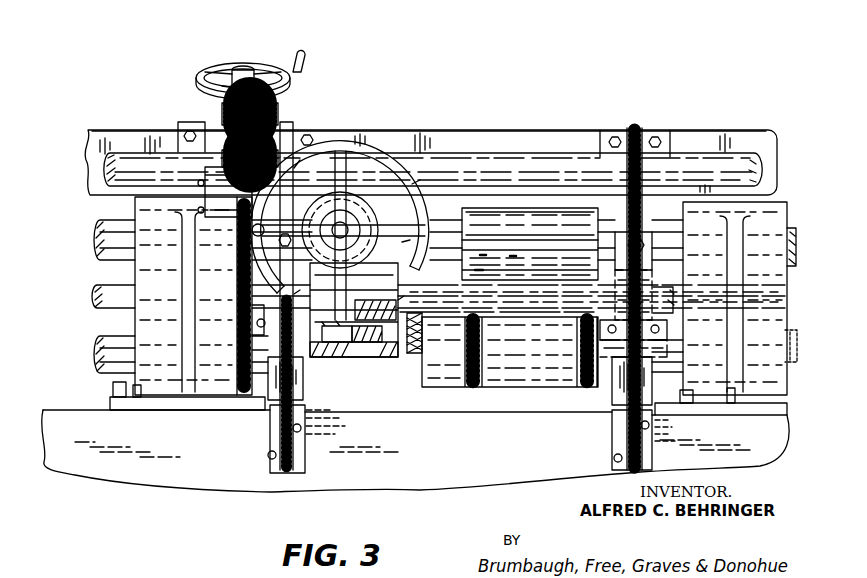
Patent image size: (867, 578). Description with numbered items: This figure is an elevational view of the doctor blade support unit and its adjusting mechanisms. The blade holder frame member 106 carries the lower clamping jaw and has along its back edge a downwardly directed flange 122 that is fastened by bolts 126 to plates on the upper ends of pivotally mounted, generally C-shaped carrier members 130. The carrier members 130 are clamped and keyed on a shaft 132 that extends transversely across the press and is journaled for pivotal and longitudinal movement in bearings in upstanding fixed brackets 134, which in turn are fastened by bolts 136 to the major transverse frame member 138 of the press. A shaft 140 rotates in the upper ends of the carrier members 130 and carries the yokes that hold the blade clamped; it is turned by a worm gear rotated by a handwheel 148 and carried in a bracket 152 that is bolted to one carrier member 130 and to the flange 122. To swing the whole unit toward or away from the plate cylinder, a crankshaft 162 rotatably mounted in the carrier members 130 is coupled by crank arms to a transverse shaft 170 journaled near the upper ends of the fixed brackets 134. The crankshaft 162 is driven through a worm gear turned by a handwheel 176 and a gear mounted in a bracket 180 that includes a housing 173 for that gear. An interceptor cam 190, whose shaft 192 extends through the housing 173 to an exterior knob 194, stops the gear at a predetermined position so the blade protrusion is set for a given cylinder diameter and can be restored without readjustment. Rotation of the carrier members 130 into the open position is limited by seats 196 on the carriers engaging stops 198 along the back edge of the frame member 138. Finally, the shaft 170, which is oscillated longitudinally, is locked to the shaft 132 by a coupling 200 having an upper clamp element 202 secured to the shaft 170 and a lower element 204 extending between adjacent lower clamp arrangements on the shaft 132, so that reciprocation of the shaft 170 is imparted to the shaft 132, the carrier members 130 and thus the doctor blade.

The holder frame member 106 is at (373, 130).
The downwardly directed flange 122 is at (437, 135).
The bolts 126 is at (654, 134).
The carrier members 130 is at (287, 137).
The shaft 132 is at (101, 355).
The fixed brackets 134 is at (182, 372).
The bolts 136 is at (117, 388).
The transverse frame member 138 is at (115, 467).
The shaft 140 is at (134, 153).
The handwheel 148 is at (263, 53).
The bracket 152 is at (213, 128).
The crankshaft 162 is at (107, 303).
The shaft 170 is at (102, 231).
The housing 173 is at (333, 345).
The handwheel 176 is at (384, 157).
The bracket 180 is at (370, 252).
The interceptor cam 190 is at (353, 352).
The shaft 192 is at (343, 334).
The knob 194 is at (424, 342).
The seats 196 is at (303, 393).
The stops 198 is at (277, 390).
The coupling 200 is at (552, 206).
The upper clamp element 202 is at (505, 212).
The lower element 204 is at (535, 365).